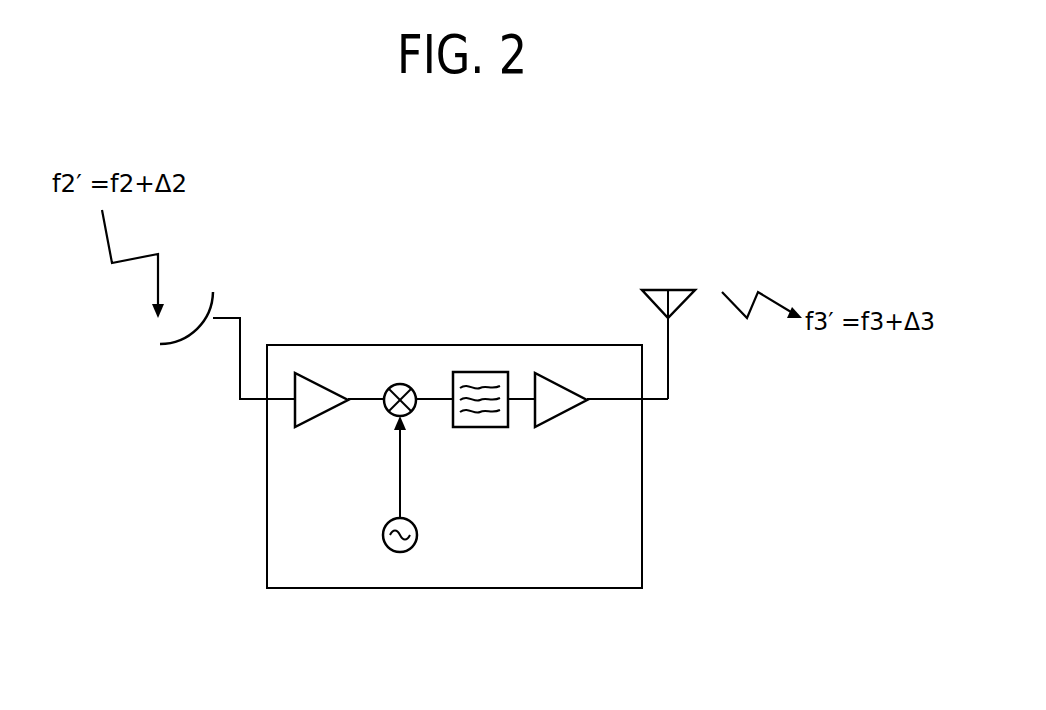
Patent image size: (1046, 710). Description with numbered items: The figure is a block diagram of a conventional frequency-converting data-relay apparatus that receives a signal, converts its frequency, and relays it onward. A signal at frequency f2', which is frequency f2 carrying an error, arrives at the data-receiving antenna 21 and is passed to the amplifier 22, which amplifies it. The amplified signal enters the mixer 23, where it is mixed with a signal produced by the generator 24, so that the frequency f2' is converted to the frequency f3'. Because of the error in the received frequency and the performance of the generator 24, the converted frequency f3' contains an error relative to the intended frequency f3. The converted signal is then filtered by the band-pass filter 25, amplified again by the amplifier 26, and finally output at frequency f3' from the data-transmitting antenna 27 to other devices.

The data-receiving antenna 21 is at (183, 343).
The amplifier 22 is at (323, 380).
The mixer 23 is at (388, 416).
The generator 24 is at (418, 532).
The band-pass filter 25 is at (493, 428).
The amplifier 26 is at (560, 413).
The data-transmitting antenna 27 is at (674, 287).